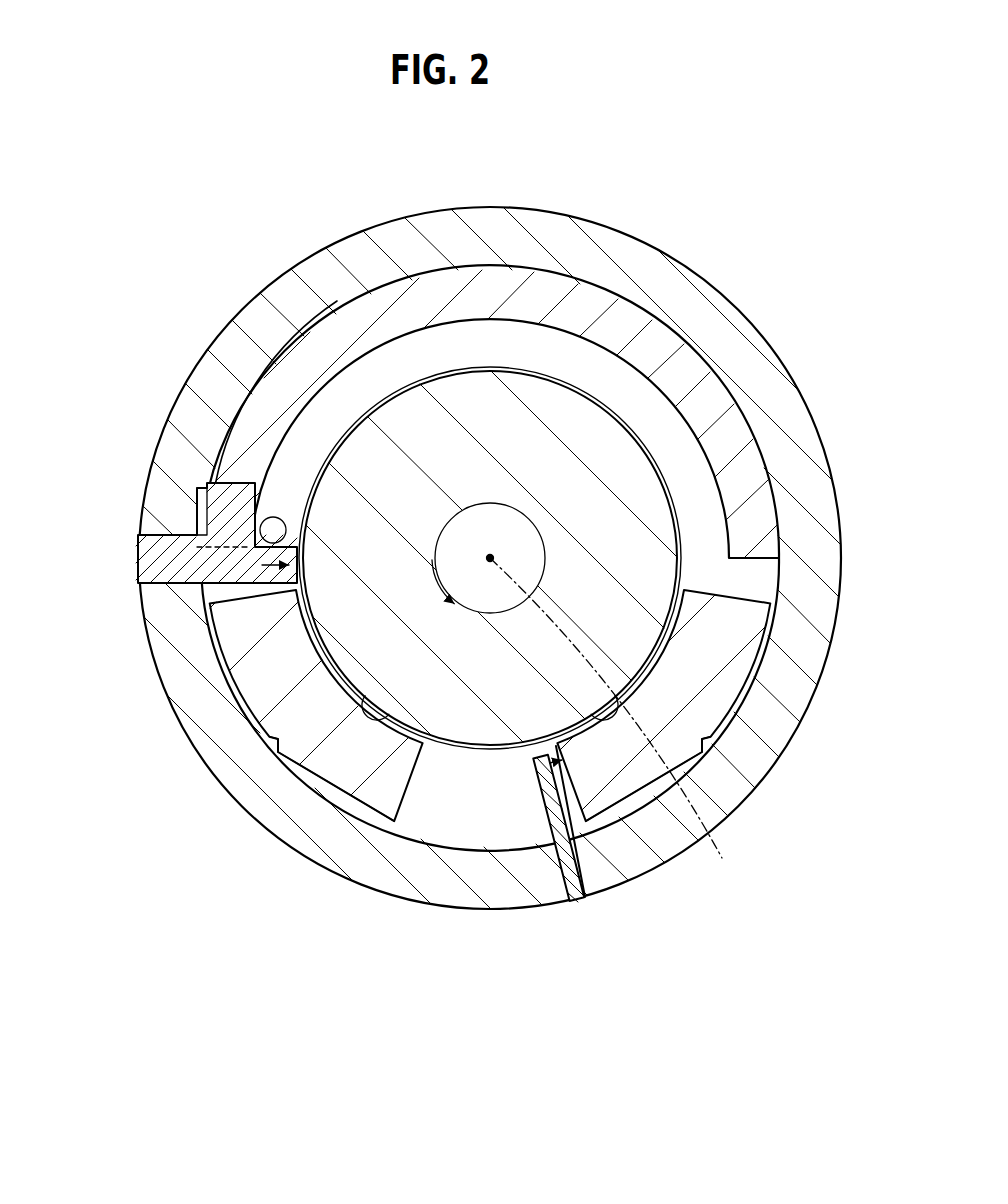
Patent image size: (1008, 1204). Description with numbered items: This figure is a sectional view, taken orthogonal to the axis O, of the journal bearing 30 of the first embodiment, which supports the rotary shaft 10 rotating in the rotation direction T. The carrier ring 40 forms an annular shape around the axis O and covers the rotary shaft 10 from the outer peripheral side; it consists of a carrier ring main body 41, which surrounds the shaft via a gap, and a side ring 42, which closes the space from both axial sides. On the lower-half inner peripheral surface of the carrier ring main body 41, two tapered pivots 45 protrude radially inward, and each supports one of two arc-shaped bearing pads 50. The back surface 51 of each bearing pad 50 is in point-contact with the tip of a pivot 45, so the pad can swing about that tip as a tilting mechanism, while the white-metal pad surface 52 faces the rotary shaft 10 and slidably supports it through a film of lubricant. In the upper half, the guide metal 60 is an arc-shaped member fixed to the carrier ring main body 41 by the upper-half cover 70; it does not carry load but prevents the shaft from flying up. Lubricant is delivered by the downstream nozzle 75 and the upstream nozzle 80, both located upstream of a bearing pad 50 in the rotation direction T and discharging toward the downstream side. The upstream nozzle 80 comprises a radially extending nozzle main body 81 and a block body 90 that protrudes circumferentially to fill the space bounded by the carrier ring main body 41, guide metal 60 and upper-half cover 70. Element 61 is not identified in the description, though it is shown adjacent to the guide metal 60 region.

The journal bearing 30 is at (768, 178).
The rotary shaft 10 is at (588, 628).
The carrier ring 40 is at (491, 618).
The carrier ring main body 41 is at (460, 887).
The side ring 42 is at (440, 820).
The pivot 45 is at (266, 756).
The bearing pad 50 is at (495, 746).
The back surface 51 is at (215, 650).
The pad surface 52 is at (340, 805).
The guide metal 60 is at (297, 447).
The pin 61 is at (260, 528).
The upper-half cover 70 is at (345, 333).
The downstream nozzle 75 is at (595, 864).
The upstream nozzle 80 is at (169, 552).
The nozzle main body 81 is at (215, 568).
The block body 90 is at (200, 508).
The rotation direction T is at (544, 547).
The axis O is at (622, 722).